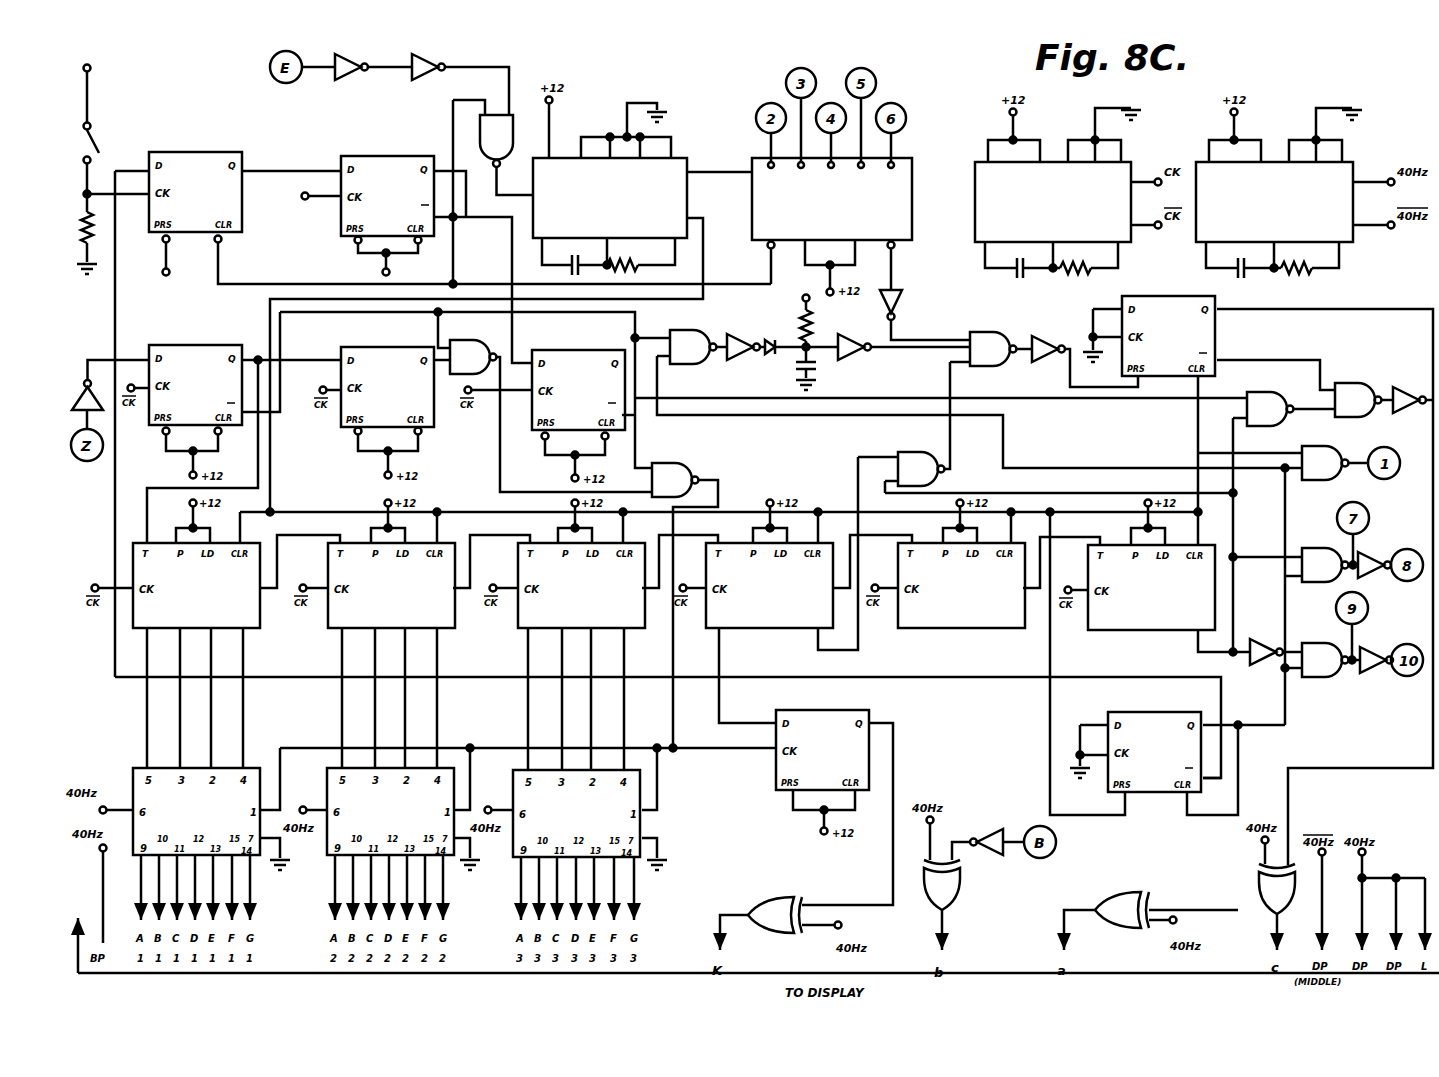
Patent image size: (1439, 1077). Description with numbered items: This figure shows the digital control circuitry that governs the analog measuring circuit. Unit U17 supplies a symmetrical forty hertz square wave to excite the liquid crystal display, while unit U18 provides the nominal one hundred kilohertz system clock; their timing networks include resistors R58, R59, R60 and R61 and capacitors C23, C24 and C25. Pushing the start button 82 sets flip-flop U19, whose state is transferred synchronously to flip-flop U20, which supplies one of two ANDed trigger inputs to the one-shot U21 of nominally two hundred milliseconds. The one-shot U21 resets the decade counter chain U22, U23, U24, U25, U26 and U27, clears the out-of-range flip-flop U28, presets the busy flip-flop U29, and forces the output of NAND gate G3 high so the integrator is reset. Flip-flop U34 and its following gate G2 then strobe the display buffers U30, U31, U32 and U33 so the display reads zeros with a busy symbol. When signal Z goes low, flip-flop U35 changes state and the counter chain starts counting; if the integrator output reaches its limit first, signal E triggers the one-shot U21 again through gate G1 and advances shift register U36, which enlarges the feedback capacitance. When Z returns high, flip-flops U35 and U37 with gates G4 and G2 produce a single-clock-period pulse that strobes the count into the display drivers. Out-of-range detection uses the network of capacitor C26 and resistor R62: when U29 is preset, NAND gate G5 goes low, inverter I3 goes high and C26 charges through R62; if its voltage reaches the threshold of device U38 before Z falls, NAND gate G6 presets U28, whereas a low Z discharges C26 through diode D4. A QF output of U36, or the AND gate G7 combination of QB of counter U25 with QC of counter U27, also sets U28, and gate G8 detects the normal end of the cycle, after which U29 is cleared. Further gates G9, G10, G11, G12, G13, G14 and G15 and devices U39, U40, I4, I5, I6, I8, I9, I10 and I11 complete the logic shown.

The start button 82 is at (101, 148).
The unit U17 is at (1274, 202).
The unit U18 is at (1053, 202).
The flip-flop U19 is at (195, 192).
The flip-flop U20 is at (387, 196).
The one-shot U21 is at (610, 198).
The decade counter U22 is at (196, 585).
The decade counter U23 is at (391, 585).
The decade counter U24 is at (581, 585).
The decade counter U25 is at (769, 585).
The decade counter U26 is at (961, 585).
The decade counter U27 is at (1151, 587).
The out-of-range flip-flop U28 is at (1168, 336).
The busy flip-flop U29 is at (1154, 752).
The display buffer U30 is at (196, 812).
The display buffer U31 is at (390, 812).
The display buffer U32 is at (576, 814).
The display buffer U33 is at (822, 750).
The flip-flop U34 is at (578, 390).
The flip-flop U35 is at (195, 385).
The shift register U36 is at (832, 199).
The flip-flop U37 is at (387, 387).
The threshold device U38 is at (854, 359).
The inverter U39 is at (355, 56).
The inverter U40 is at (83, 383).
The gate G1 is at (496, 141).
The gate G2 is at (675, 480).
The NAND gate G3 is at (1325, 463).
The gate G4 is at (473, 357).
The NAND gate G5 is at (693, 347).
The NAND gate G6 is at (993, 349).
The AND gate G7 is at (921, 469).
The gate G8 is at (1270, 409).
The NAND gate G9 is at (1358, 400).
The NAND gate G10 is at (1325, 565).
The NAND gate G11 is at (1325, 660).
The exclusive-OR gate G12 is at (1263, 894).
The exclusive-OR gate G13 is at (1122, 910).
The exclusive-OR gate G14 is at (956, 885).
The exclusive-OR gate G15 is at (775, 915).
The inverter I3 is at (743, 356).
The inverter I4 is at (428, 56).
The inverter I5 is at (898, 285).
The inverter I6 is at (1048, 356).
The inverter I8 is at (1266, 661).
The inverter I9 is at (1409, 391).
The inverter I10 is at (1375, 556).
The inverter I11 is at (1376, 667).
The resistor R58 is at (81, 248).
The resistor R59 is at (645, 275).
The resistor R60 is at (1082, 279).
The resistor R61 is at (1303, 279).
The resistor R62 is at (806, 320).
The capacitor C23 is at (567, 273).
The capacitor C24 is at (1030, 277).
The capacitor C25 is at (1251, 277).
The capacitor C26 is at (790, 368).
The diode D4 is at (766, 338).